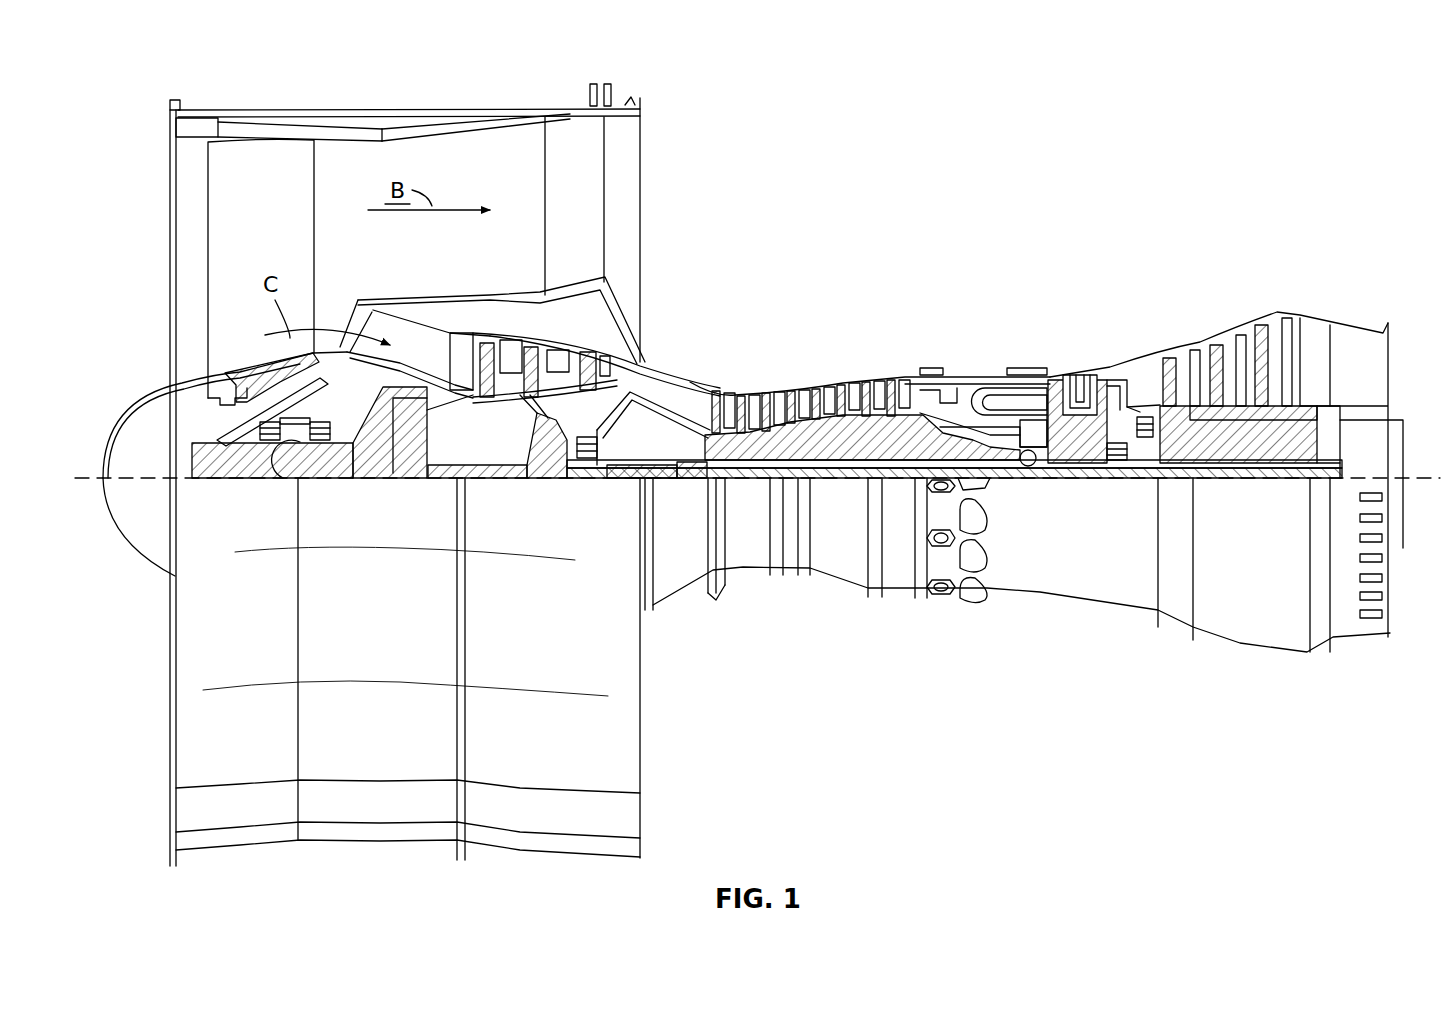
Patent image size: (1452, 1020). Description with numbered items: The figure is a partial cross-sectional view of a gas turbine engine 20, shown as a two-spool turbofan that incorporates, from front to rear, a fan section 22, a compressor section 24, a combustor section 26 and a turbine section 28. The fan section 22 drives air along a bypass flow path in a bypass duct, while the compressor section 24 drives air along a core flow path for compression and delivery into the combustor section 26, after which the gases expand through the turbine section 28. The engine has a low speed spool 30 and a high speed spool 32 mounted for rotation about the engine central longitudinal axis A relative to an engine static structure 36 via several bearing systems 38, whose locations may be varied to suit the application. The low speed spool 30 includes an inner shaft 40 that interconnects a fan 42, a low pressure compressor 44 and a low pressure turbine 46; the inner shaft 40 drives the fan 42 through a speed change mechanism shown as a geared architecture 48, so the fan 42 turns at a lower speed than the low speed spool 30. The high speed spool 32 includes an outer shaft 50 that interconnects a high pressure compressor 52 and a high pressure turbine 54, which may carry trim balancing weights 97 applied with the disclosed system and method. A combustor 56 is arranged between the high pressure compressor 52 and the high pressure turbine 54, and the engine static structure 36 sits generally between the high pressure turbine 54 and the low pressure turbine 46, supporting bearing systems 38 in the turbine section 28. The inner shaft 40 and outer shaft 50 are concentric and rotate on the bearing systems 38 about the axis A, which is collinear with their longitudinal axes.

The gas turbine engine 20 is at (1272, 80).
The fan section 22 is at (266, 108).
The compressor section 24 is at (786, 300).
The combustor section 26 is at (972, 295).
The turbine section 28 is at (1150, 272).
The low speed spool 30 is at (857, 486).
The high speed spool 32 is at (920, 425).
The engine static structure 36 is at (900, 600).
The bearing systems 38 is at (285, 462).
The inner shaft 40 is at (655, 485).
The fan 42 is at (270, 210).
The low pressure compressor 44 is at (558, 358).
The low pressure turbine 46 is at (1240, 320).
The geared architecture 48 is at (398, 460).
The outer shaft 50 is at (1035, 466).
The high pressure compressor 52 is at (822, 438).
The high pressure turbine 54 is at (1088, 385).
The combustor 56 is at (1000, 398).
The trim balancing weights 97 is at (1072, 388).
The engine central longitudinal axis A is at (1412, 472).